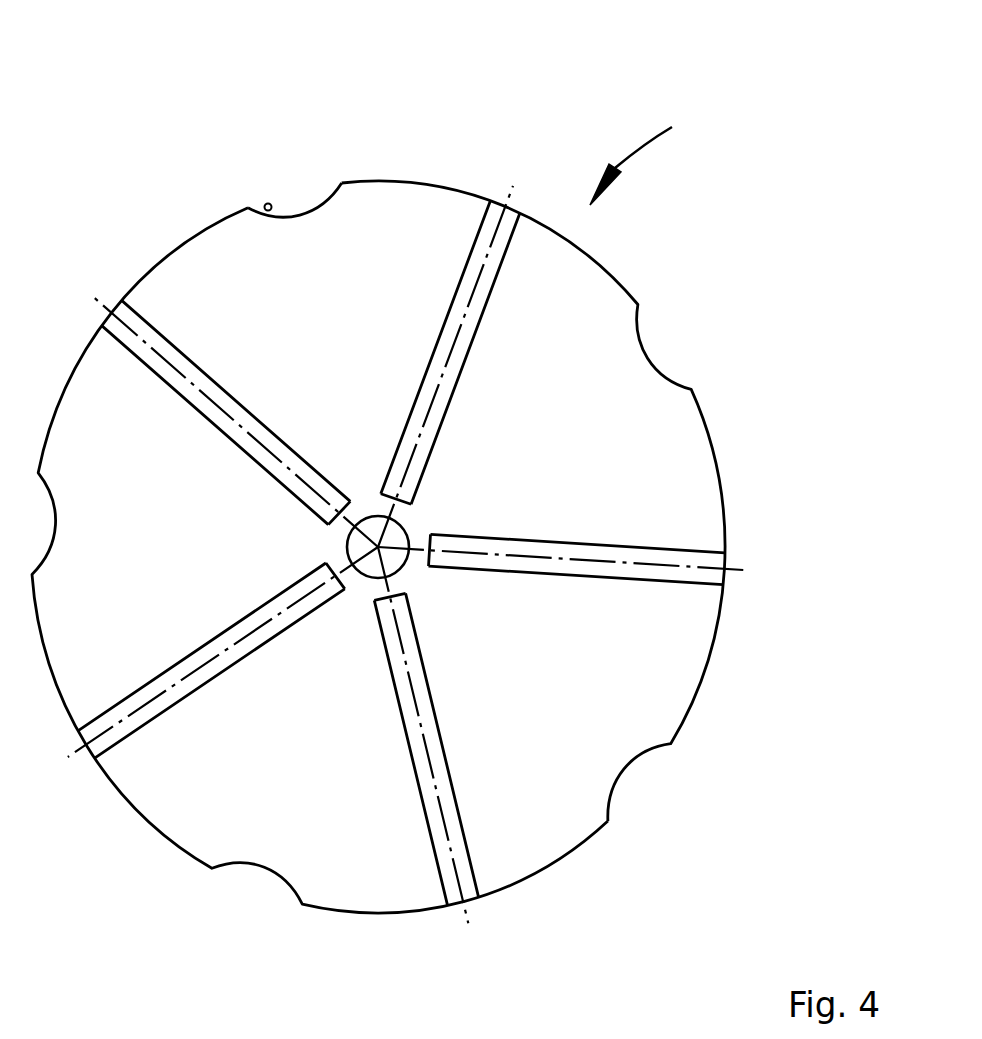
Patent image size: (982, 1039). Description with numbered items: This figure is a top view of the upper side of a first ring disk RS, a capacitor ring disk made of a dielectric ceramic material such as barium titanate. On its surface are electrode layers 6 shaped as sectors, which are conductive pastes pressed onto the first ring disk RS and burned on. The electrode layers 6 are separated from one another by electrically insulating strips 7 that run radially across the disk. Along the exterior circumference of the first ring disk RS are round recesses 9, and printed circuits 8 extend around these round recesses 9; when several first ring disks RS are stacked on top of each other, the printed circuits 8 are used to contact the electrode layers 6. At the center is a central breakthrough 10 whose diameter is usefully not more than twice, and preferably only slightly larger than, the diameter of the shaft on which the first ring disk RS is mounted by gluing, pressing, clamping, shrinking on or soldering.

The electrode layers 6 is at (393, 272).
The electrically insulating strips 7 is at (718, 563).
The printed circuits 8 is at (267, 204).
The round recesses 9 is at (297, 209).
The central breakthrough 10 is at (400, 528).
The first ring disk RS is at (670, 160).